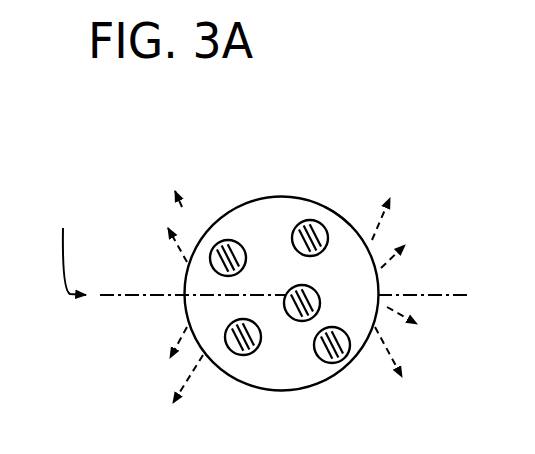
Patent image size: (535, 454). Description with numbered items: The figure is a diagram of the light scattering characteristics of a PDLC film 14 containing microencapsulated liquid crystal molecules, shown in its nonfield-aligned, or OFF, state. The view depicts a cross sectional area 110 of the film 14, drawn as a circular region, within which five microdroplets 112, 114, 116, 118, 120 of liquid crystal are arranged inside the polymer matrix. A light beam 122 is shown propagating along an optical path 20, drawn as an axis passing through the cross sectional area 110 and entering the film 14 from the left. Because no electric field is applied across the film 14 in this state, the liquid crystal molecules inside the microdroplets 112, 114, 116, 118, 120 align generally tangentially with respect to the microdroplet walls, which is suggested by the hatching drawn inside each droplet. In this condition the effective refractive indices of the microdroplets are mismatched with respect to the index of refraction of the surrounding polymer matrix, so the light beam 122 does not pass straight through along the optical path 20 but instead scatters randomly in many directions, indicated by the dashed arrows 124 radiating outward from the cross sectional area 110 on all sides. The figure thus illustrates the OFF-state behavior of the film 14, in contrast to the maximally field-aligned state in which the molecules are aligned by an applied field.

The film 14 is at (337, 186).
The optical path 20 is at (138, 297).
The cross sectional area 110 is at (356, 219).
The microdroplet 112 is at (241, 244).
The microdroplet 114 is at (303, 226).
The microdroplet 116 is at (320, 301).
The microdroplet 118 is at (255, 353).
The microdroplet 120 is at (330, 363).
The light beam 122 is at (65, 246).
The radial flow paths 124 is at (197, 250).